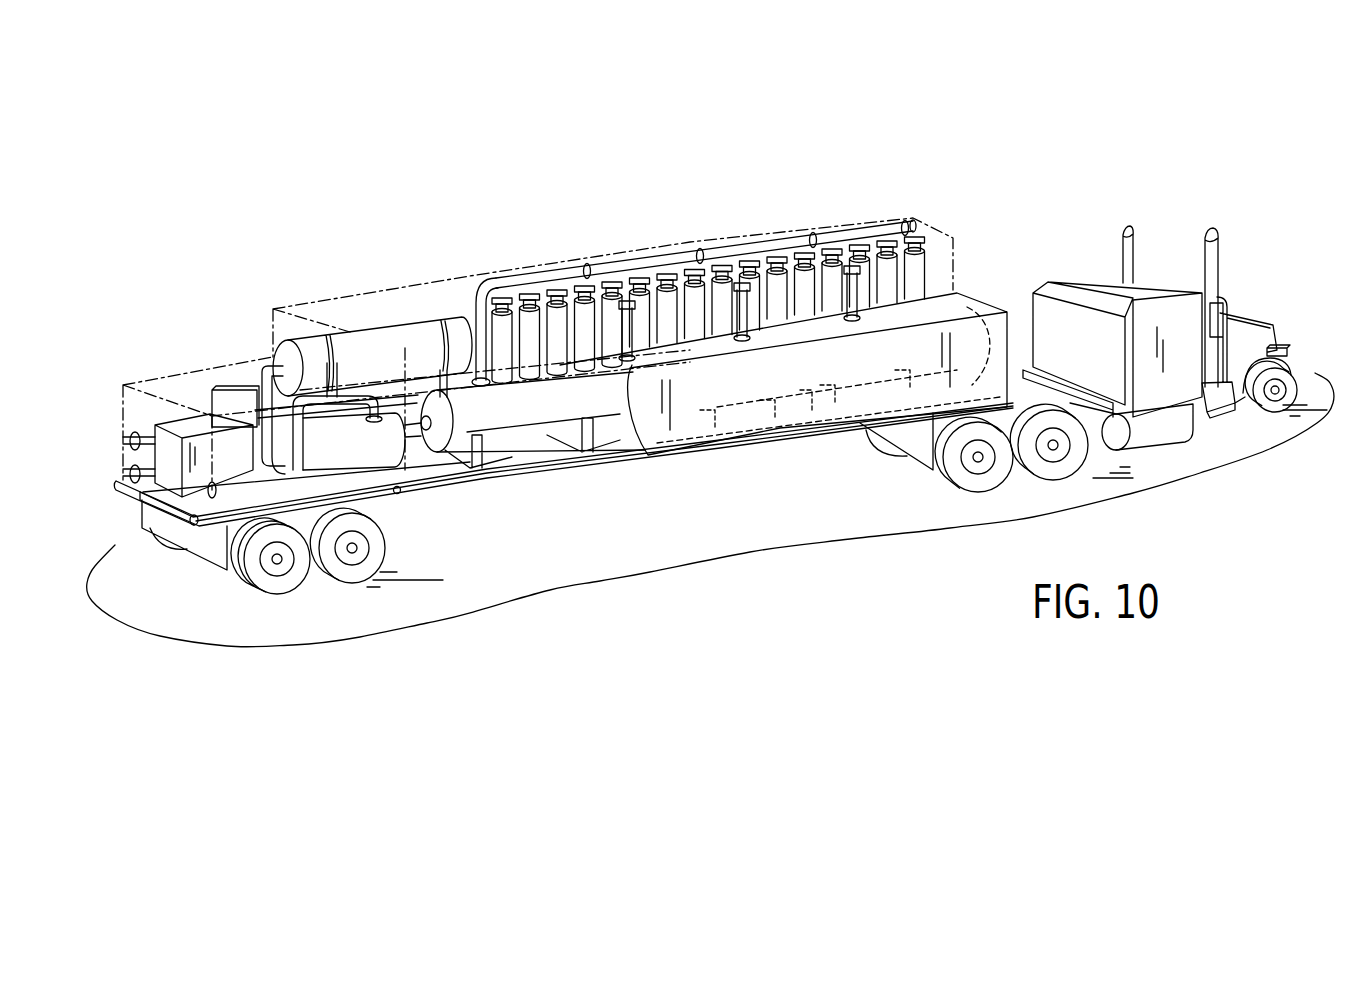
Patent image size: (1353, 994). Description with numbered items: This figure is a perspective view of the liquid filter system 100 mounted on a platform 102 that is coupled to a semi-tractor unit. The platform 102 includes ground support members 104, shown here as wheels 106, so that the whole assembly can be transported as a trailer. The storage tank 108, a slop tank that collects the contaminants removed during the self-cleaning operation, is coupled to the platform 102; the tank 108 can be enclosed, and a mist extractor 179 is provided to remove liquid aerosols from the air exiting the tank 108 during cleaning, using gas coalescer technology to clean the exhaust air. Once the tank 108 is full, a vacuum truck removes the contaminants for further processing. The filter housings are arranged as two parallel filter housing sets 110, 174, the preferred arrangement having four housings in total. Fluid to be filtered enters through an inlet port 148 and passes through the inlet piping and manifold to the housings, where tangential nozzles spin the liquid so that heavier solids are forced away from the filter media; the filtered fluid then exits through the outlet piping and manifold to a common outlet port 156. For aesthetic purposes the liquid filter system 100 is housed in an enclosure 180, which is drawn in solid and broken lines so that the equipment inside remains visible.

The liquid filter system 100 is at (553, 238).
The platform 102 is at (563, 464).
The ground support members 104 is at (376, 531).
The wheels 106 is at (332, 568).
The storage tank 108 is at (517, 430).
The filter housing set 110 is at (942, 272).
The inlet port 148 is at (124, 440).
The common outlet port 156 is at (122, 477).
The filter housing set 174 is at (819, 286).
The mist extractor 179 is at (852, 298).
The enclosure 180 is at (987, 306).